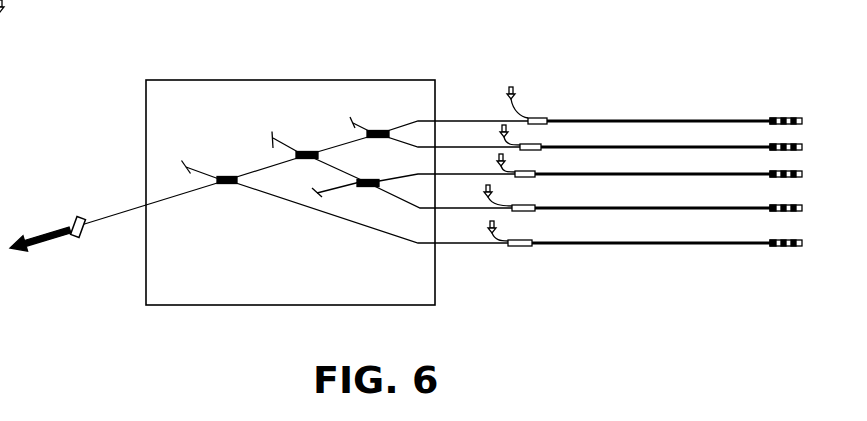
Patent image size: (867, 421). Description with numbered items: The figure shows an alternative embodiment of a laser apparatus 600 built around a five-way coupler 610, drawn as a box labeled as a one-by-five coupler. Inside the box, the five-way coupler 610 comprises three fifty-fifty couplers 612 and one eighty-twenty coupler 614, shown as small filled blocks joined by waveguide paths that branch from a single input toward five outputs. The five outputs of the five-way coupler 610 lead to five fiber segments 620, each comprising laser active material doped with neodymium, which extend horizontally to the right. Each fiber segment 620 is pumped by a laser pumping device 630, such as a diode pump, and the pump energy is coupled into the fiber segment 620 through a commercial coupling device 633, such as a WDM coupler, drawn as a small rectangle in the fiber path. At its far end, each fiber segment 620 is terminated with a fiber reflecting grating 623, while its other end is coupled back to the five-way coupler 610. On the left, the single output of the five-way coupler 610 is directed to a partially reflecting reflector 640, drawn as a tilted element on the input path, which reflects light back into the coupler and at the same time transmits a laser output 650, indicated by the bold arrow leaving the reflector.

The laser apparatus 600 is at (447, 28).
The five-way coupler 610 is at (263, 80).
The 50%-50% coupler 612 is at (307, 151).
The 80%-20% coupler 614 is at (226, 176).
The fiber segment 620 is at (702, 242).
The fiber reflecting grating 623 is at (791, 118).
The laser pumping device 630 is at (507, 92).
The coupling device 633 is at (541, 118).
The partially reflecting reflector 640 is at (81, 216).
The laser output 650 is at (44, 245).